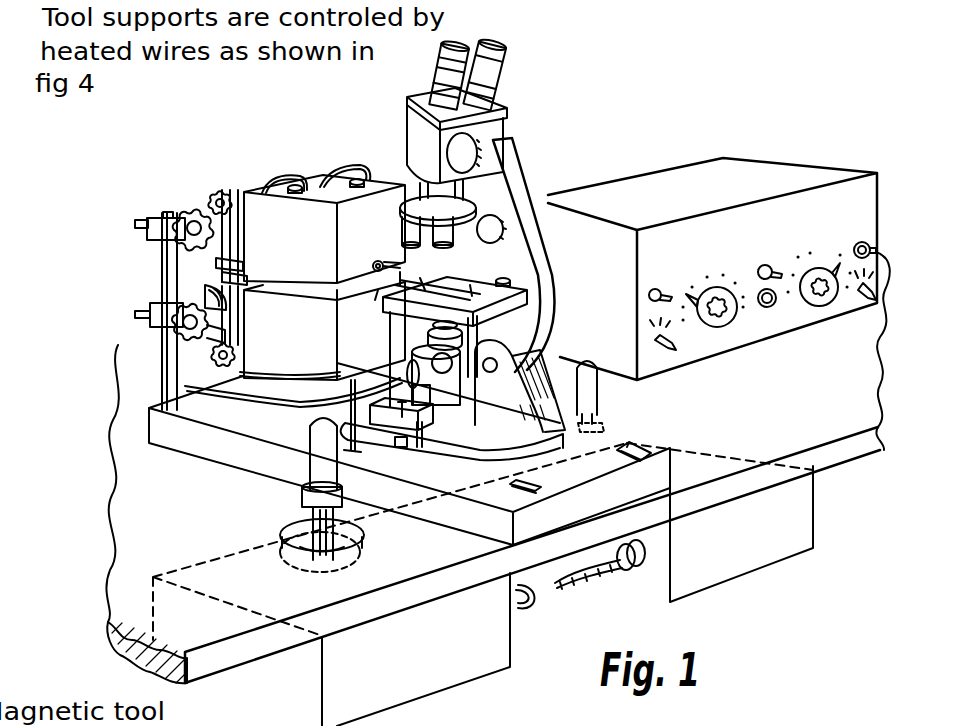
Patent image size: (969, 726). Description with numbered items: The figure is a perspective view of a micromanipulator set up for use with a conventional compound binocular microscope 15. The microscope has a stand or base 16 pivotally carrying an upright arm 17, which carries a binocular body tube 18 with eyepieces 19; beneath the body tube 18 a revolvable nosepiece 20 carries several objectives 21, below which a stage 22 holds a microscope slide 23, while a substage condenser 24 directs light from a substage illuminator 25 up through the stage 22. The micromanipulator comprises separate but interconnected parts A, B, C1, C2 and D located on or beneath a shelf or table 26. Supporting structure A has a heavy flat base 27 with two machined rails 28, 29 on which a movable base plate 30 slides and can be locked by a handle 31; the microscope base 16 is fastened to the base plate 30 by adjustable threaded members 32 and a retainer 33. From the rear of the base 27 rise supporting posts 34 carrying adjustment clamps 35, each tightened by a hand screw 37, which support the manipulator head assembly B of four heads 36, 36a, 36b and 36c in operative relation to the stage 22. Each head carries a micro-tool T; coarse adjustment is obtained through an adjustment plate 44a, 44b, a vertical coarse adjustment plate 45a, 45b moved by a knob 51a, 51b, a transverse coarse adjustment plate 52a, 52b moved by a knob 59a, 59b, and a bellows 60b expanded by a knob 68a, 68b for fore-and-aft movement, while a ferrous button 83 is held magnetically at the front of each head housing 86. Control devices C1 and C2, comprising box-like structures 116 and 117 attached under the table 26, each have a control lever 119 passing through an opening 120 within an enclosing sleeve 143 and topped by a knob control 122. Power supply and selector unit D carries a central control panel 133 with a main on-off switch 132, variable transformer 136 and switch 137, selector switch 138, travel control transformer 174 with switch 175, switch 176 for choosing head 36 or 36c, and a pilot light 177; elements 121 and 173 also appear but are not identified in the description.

The microscope 15 is at (464, 234).
The stand or base 16 is at (534, 410).
The upright arm 17 is at (552, 266).
The binocular body tube 18 is at (408, 128).
The eyepieces 19 is at (470, 54).
The revolvable nosepiece 20 is at (422, 202).
The objectives 21 is at (440, 243).
The stage 22 is at (395, 301).
The microscope slide 23 is at (463, 281).
The substage condenser 24 is at (430, 331).
The substage illuminator 25 is at (413, 373).
The shelf or table 26 is at (838, 458).
The base 27 is at (426, 454).
The rail 28 is at (538, 491).
The rail 29 is at (629, 460).
The movable base plate 30 is at (612, 428).
The handle 31 is at (452, 460).
The adjustable threaded members 32 is at (426, 438).
The retainer 33 is at (392, 435).
The supporting posts 34 is at (165, 283).
The adjustment clamps 35 is at (153, 218).
The micromanipulator head 36 is at (377, 170).
The micromanipulator head 36a is at (254, 259).
The micromanipulator head 36b is at (252, 297).
The micromanipulator head 36c is at (457, 271).
The hand screw 37 is at (148, 223).
The adjustment plate 44a is at (256, 239).
The adjustment plate 44b is at (247, 337).
The vertical coarse adjustment plate 45a is at (240, 243).
The vertical coarse adjustment plate 45b is at (240, 333).
The knob 51a is at (221, 190).
The knob 51b is at (213, 356).
The transverse coarse adjustment plate 52a is at (228, 242).
The transverse coarse adjustment plate 52b is at (233, 323).
The knob 59a is at (220, 170).
The knob 59b is at (186, 331).
The bellows 60b is at (200, 296).
The knob 68a is at (192, 218).
The knob 68b is at (176, 326).
The button 83 is at (373, 265).
The housing 86 is at (400, 215).
The box-like structure 116 is at (441, 649).
The box-like structure 117 is at (684, 539).
The control lever 119 is at (268, 570).
The opening 120 is at (346, 551).
The hole 121 is at (346, 537).
The knob control 122 is at (308, 472).
The main on-off switch 132 is at (768, 265).
The central control panel 133 is at (757, 200).
The variable transformer 136 is at (823, 270).
The switch 137 is at (862, 242).
The switch 138 is at (868, 302).
The enclosing sleeve 143 is at (308, 512).
The switch lever 173 is at (858, 293).
The travel control transformer 174 is at (717, 287).
The switch 175 is at (657, 289).
The switch 176 is at (677, 347).
The pilot light 177 is at (767, 307).
The supporting structure A is at (192, 476).
The manipulator head assembly B is at (315, 163).
The main electric power supply and selector unit D is at (645, 146).
The micro-tool T is at (376, 297).
The control device C1 is at (397, 662).
The control device C2 is at (739, 538).